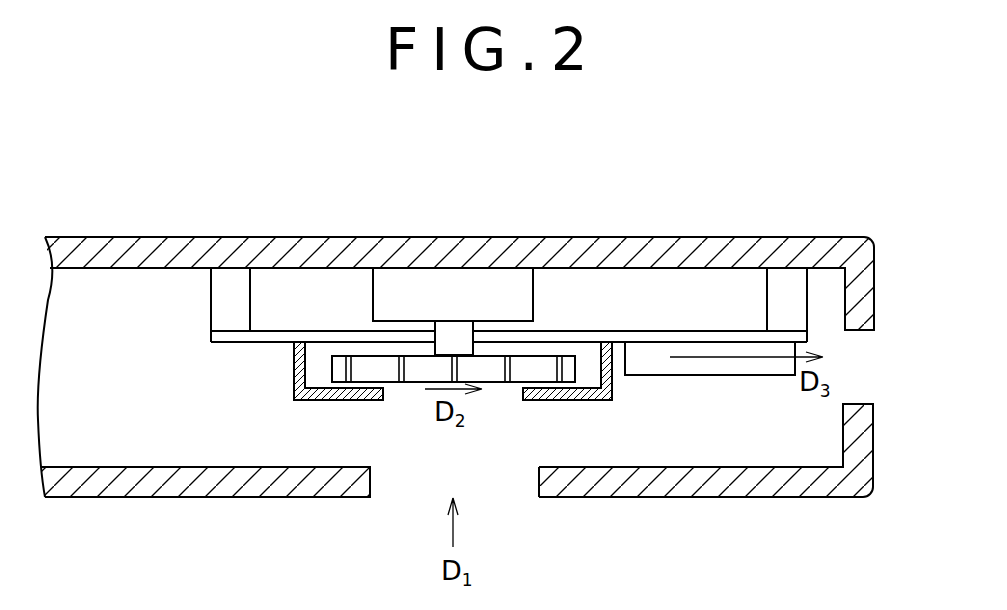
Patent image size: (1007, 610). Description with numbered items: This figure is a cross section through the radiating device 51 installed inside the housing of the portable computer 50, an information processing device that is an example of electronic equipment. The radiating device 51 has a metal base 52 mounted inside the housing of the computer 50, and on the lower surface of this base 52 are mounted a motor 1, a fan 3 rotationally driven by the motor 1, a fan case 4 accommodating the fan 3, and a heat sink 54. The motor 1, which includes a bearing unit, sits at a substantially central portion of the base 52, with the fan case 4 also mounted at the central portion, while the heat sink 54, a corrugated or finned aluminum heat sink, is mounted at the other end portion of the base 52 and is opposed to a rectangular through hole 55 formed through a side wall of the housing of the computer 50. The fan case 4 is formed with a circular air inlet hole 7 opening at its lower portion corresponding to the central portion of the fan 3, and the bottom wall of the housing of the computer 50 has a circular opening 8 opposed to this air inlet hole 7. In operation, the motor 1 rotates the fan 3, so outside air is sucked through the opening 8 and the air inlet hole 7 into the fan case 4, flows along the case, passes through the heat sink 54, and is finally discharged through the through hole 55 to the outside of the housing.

The motor 1 is at (567, 287).
The fan 3 is at (340, 372).
The fan case 4 is at (561, 400).
The air inlet hole 7 is at (387, 393).
The opening 8 is at (538, 478).
The portable computer 50 is at (756, 490).
The radiating device 51 is at (432, 292).
The metal base 52 is at (243, 338).
The heat sink 54 is at (648, 370).
The through hole 55 is at (855, 331).